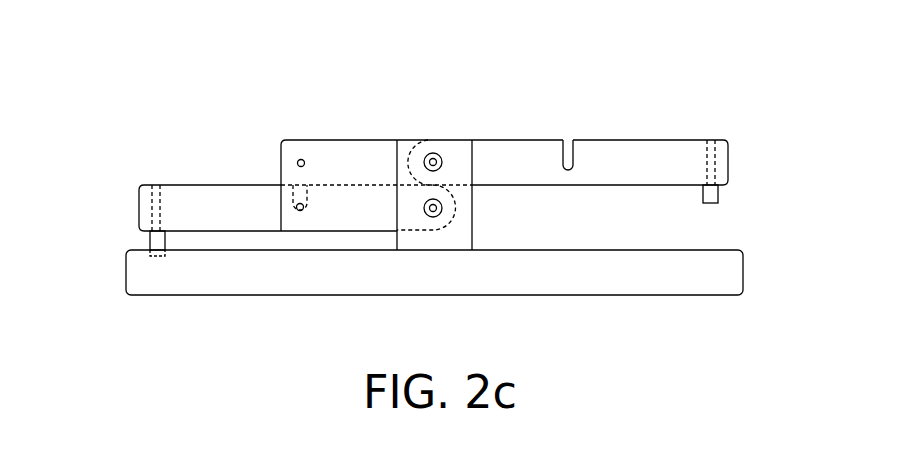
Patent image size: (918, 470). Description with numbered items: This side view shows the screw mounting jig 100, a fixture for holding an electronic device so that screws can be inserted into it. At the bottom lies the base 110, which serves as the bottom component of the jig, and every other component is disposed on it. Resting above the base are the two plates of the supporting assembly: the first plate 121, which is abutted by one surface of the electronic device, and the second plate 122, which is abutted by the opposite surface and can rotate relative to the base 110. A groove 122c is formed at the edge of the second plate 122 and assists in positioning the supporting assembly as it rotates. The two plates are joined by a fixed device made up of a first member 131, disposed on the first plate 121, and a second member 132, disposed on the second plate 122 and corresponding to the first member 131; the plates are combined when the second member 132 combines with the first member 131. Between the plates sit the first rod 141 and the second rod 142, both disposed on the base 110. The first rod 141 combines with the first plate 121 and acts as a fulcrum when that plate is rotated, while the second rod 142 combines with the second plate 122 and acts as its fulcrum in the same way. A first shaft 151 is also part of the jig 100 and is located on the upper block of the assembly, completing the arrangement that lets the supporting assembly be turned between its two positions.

The screw mounting jig 100 is at (85, 38).
The base 110 is at (675, 270).
The first plate 121 is at (222, 205).
The second plate 122 is at (662, 163).
The groove 122c is at (566, 160).
The first member 131 is at (150, 242).
The second member 132 is at (718, 192).
The first rod 141 is at (433, 218).
The second rod 142 is at (437, 153).
The first shaft 151 is at (347, 160).